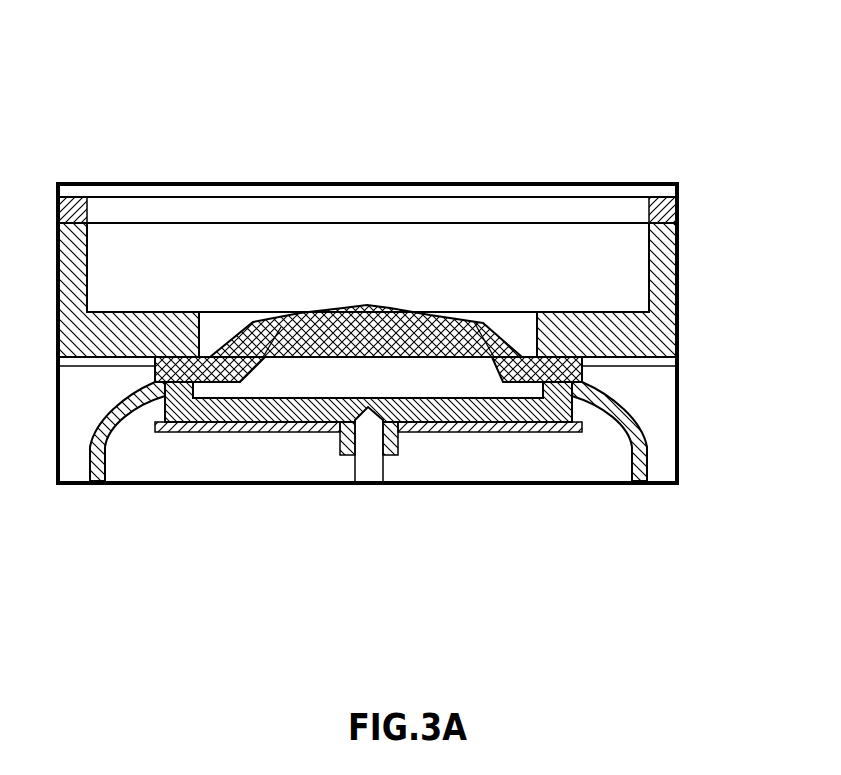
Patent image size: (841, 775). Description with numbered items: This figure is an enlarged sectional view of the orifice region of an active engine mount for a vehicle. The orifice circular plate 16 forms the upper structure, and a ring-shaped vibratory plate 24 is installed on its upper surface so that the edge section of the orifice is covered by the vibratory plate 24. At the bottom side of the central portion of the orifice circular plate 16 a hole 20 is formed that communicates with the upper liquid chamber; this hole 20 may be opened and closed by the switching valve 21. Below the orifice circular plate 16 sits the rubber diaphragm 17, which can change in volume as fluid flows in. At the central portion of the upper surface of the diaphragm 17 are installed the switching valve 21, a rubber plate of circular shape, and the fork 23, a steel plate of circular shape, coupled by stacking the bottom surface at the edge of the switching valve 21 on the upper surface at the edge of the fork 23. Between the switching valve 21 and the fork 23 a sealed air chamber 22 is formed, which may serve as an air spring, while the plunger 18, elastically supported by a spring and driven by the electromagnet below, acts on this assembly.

The orifice circular plate 16 is at (680, 358).
The diaphragm 17 is at (645, 470).
The plunger 18 is at (367, 462).
The hole 20 is at (524, 428).
The switching valve 21 is at (297, 321).
The sealed air chamber 22 is at (422, 383).
The fork 23 is at (425, 400).
The vibratory plate 24 is at (128, 213).